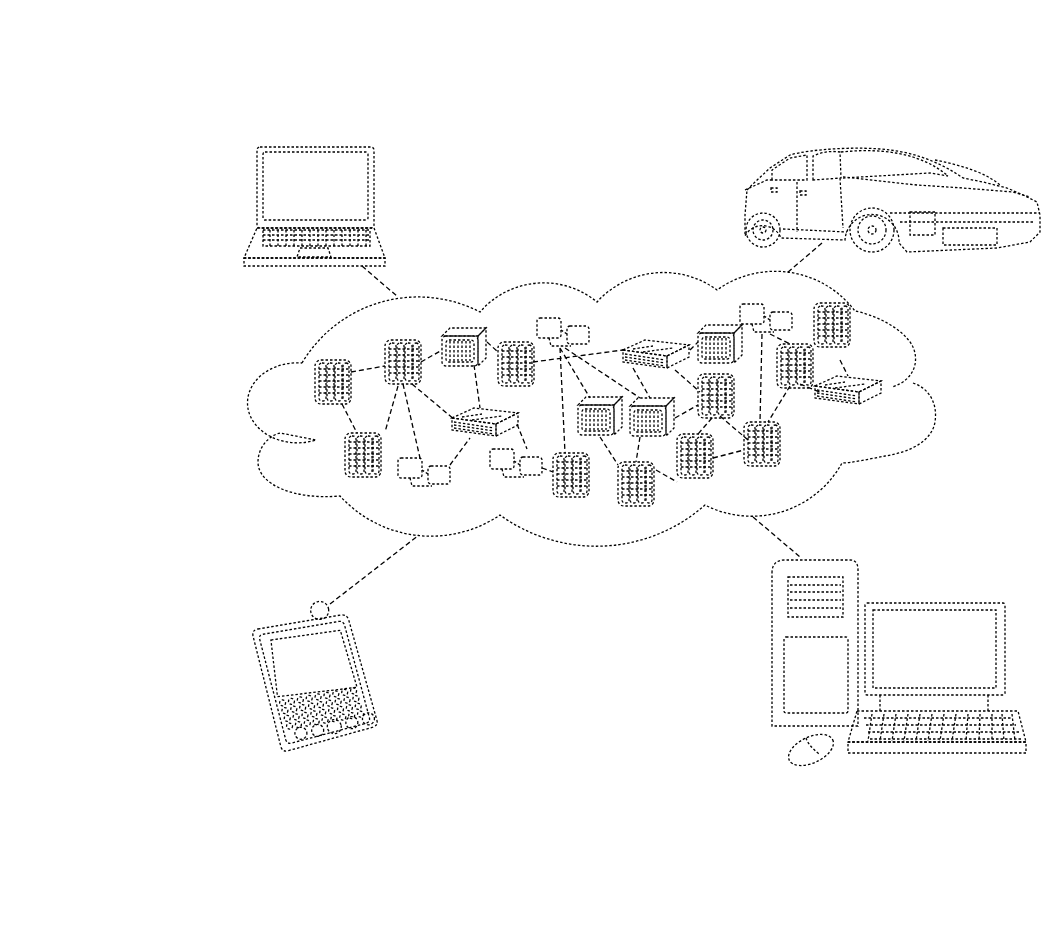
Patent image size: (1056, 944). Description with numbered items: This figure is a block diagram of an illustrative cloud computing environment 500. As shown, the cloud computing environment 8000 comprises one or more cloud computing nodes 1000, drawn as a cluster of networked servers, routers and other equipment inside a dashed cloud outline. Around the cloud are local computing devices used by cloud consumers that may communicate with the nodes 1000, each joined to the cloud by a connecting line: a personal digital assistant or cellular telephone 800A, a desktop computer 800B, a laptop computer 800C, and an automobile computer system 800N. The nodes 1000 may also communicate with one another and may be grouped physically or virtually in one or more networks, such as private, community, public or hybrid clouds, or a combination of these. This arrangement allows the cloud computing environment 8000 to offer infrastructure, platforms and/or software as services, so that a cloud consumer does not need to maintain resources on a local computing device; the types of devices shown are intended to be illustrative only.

The cloud computing environment 500 is at (192, 64).
The laptop computer 800C is at (376, 195).
The automobile computer system 800N is at (745, 200).
The cloud computing environment 8000 is at (932, 390).
The cloud computing nodes 1000 is at (895, 419).
The personal digital assistant (PDA) or cellular telephone 800A is at (366, 669).
The desktop computer 800B is at (933, 601).